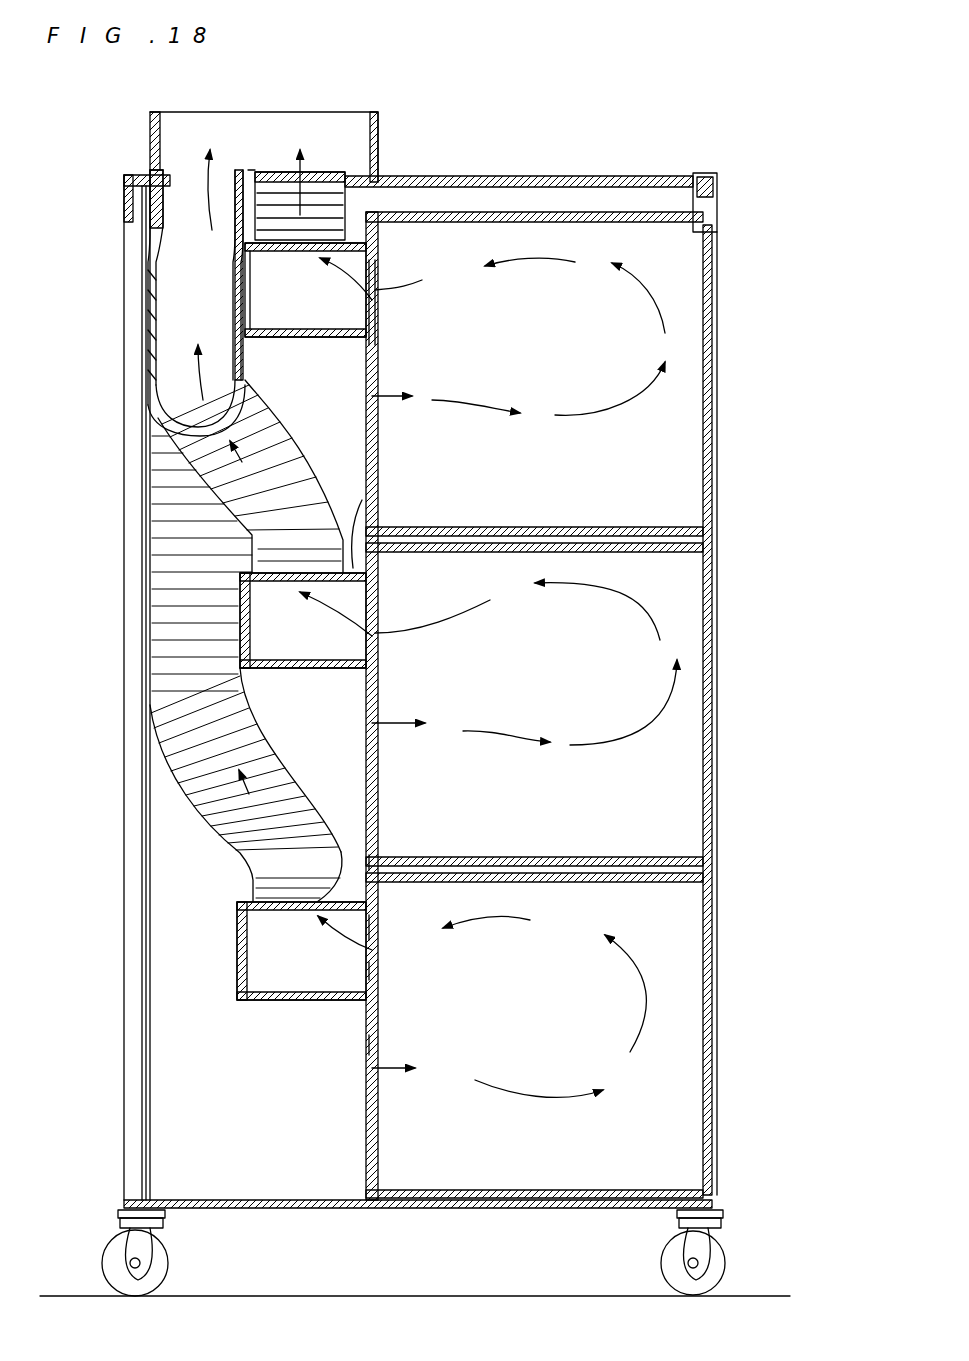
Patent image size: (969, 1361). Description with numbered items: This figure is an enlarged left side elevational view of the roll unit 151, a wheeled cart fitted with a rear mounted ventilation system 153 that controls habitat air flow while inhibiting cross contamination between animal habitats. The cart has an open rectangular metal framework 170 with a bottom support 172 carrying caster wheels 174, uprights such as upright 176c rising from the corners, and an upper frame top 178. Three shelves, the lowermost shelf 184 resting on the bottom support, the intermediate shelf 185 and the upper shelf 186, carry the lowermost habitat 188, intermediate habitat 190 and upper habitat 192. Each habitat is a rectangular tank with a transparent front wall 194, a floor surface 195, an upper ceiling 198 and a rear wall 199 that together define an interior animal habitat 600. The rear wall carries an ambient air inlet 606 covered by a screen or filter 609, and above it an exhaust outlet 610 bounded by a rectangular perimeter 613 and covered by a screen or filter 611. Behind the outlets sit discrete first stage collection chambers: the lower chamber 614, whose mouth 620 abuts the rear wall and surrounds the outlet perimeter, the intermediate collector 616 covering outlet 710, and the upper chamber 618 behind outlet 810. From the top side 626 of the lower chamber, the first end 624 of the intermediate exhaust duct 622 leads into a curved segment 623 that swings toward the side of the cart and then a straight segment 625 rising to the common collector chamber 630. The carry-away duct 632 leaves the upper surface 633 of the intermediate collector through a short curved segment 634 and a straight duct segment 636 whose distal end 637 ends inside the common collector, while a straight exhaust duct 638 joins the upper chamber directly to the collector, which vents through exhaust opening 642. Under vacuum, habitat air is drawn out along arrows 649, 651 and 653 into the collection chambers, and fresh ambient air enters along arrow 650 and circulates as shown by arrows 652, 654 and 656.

The interior animal habitat 600 is at (662, 1088).
The metal framework 170 is at (142, 984).
The upright 176c is at (125, 616).
The ventilation system 153 is at (185, 802).
The common collector chamber 630 is at (378, 130).
The exhaust opening 642 is at (280, 122).
The distal end of straight duct segment 637 is at (170, 132).
The straight duct segment 636 is at (148, 258).
The straight exhaust duct 638 is at (340, 200).
The upper frame top 178 is at (512, 178).
The upper habitat 192 is at (688, 440).
The roll unit 151 is at (716, 626).
The front wall 194 is at (706, 1004).
The upper shelf 186 is at (702, 536).
The intermediate habitat 190 is at (695, 770).
The intermediate shelf 185 is at (702, 866).
The upper ceiling 198 is at (624, 882).
The lowermost habitat 188 is at (690, 962).
The floor surface 195 is at (484, 1188).
The rear wall 199 is at (368, 1146).
The lowermost shelf 184 is at (710, 1196).
The bottom support 172 is at (312, 1210).
The caster wheels 174 is at (715, 1226).
The upper surface of first stage collector 633 is at (375, 512).
The exhaust outlet 810 is at (375, 300).
The upper first stage collection chamber 618 is at (288, 338).
The directional arrow 653 is at (315, 280).
The short curved segment 634 is at (295, 468).
The carry-away duct 632 is at (180, 446).
The straight segment 625 is at (160, 540).
The directional arrow 651 is at (305, 602).
The exhaust outlet 710 is at (298, 592).
The intermediate first stage collector 616 is at (292, 670).
The intermediate exhaust duct 622 is at (180, 772).
The curved segment 623 is at (280, 788).
The top side of lower first stage collection chamber 626 is at (248, 898).
The first end of exhaust duct 624 is at (372, 853).
The directional arrow 649 is at (310, 944).
The lower first stage collection chamber 614 is at (237, 978).
The rectangular perimeter 613 is at (366, 976).
The screen or filter 611 is at (380, 930).
The left-side exhaust outlet 610 is at (376, 968).
The mouth 620 is at (368, 1002).
The ambient air inlet 606 is at (368, 1046).
The screen or filter 609 is at (376, 1046).
The directional arrow 650 is at (328, 1075).
The directional arrow 652 is at (522, 1088).
The directional arrow 654 is at (648, 1002).
The directional arrow 656 is at (494, 918).